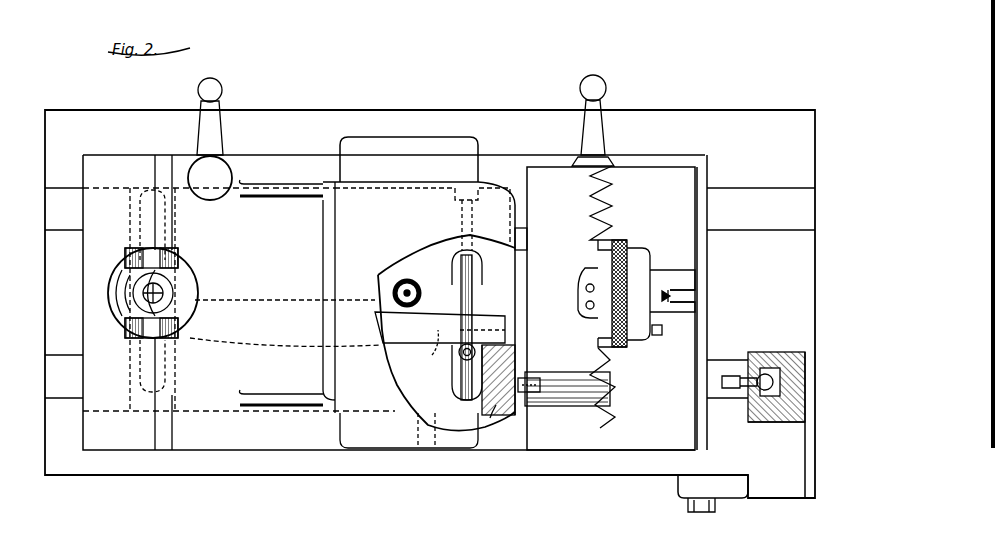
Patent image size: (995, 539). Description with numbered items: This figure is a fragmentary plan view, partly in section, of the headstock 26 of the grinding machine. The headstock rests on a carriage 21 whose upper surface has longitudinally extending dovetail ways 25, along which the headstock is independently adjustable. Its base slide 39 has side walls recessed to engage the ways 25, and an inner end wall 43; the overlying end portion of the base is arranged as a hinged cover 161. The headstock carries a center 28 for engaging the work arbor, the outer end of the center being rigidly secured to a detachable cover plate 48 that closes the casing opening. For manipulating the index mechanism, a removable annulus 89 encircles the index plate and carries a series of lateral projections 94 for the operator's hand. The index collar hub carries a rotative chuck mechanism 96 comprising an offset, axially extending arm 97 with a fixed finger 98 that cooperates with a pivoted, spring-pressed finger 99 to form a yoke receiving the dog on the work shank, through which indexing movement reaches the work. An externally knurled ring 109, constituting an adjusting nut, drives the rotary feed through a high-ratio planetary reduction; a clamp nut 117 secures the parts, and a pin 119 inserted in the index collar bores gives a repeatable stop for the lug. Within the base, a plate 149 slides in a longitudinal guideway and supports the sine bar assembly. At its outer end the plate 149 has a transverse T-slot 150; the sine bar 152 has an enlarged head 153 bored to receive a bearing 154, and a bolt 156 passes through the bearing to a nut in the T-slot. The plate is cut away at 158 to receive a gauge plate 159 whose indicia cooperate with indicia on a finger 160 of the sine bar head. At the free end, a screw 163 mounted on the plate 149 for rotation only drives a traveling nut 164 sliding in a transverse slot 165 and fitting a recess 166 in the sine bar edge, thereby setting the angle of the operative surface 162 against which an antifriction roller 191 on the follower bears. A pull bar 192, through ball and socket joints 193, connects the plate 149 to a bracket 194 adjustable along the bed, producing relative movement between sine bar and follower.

The carriage 21 is at (95, 476).
The dovetail ways 25 is at (66, 200).
The headstock 26 is at (615, 132).
The center 28 is at (690, 296).
The base slide 39 is at (675, 170).
The inner end wall 43 is at (704, 162).
The cover plate 48 is at (323, 229).
The annulus 89 is at (550, 177).
The lateral projections 94 is at (605, 394).
The rotative chuck mechanism 96 is at (620, 238).
The arm 97 is at (658, 283).
The fixed finger 98 is at (690, 278).
The pivoted spring-pressed finger 99 is at (690, 306).
The externally knurled ring 109 is at (618, 348).
The clamp nut 117 is at (660, 330).
The pin 119 is at (594, 300).
The plate 149 is at (503, 298).
The T-slot 150 is at (180, 256).
The sine bar 152 is at (196, 302).
The enlarged head 153 is at (168, 285).
The bearing 154 is at (165, 292).
The bolt 156 is at (148, 340).
The cut-away portion 158 is at (178, 330).
The gauge plate 159 is at (128, 330).
The finger 160 is at (126, 262).
The hinged cover 161 is at (95, 310).
The operative surface 162 is at (432, 306).
The screw 163 is at (455, 280).
The traveling nut 164 is at (460, 358).
The transverse slot 165 is at (483, 292).
The recess 166 is at (458, 372).
The antifriction roller 191 is at (418, 268).
The pull bar 192 is at (531, 380).
The ball and socket joints 193 is at (492, 420).
The bracket 194 is at (760, 450).